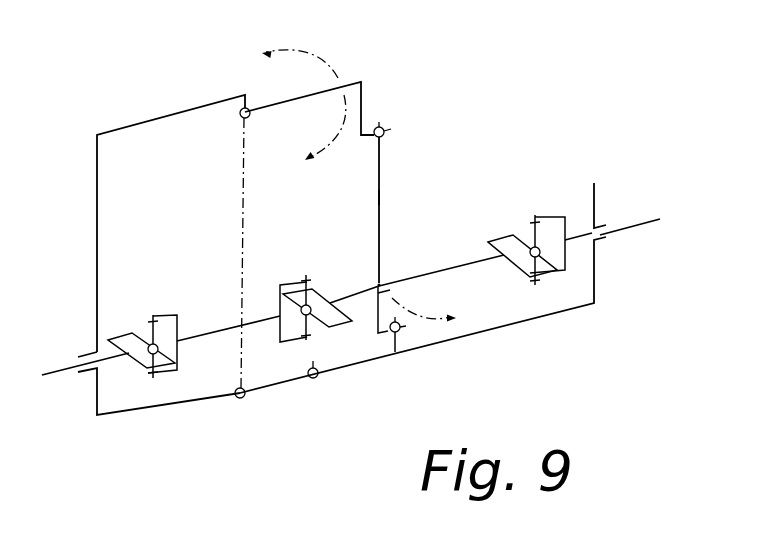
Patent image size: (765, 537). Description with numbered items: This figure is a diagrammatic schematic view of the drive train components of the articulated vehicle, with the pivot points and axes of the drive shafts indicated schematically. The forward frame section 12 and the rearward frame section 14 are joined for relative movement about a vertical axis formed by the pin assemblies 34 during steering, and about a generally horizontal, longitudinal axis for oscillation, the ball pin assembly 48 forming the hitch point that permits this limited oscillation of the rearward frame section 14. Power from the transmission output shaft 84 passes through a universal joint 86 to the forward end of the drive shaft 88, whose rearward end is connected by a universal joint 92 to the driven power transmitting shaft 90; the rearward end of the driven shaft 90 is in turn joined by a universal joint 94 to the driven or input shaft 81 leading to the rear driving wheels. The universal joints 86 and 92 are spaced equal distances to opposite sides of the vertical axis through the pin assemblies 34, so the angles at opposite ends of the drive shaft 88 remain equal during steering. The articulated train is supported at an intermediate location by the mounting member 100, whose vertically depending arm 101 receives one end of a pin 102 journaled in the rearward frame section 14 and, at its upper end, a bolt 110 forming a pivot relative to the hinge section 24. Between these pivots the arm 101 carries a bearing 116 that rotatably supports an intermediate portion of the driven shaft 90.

The forward frame section 12 is at (150, 402).
The rearward frame section 14 is at (518, 323).
The hinge section 24 is at (361, 82).
The pin assemblies 34 is at (240, 118).
The ball pin assembly 48 is at (319, 383).
The driven shaft 81 is at (625, 230).
The output shaft 84 is at (62, 370).
The universal joint 86 is at (145, 332).
The drive shaft 88 is at (207, 332).
The driven power transmitting shaft 90 is at (447, 275).
The universal joint 92 is at (288, 287).
The universal joint 94 is at (500, 238).
The mounting member 100 is at (388, 174).
The arm 101 is at (379, 197).
The pin 102 is at (398, 333).
The bolt 110 is at (385, 130).
The bearing 116 is at (381, 282).